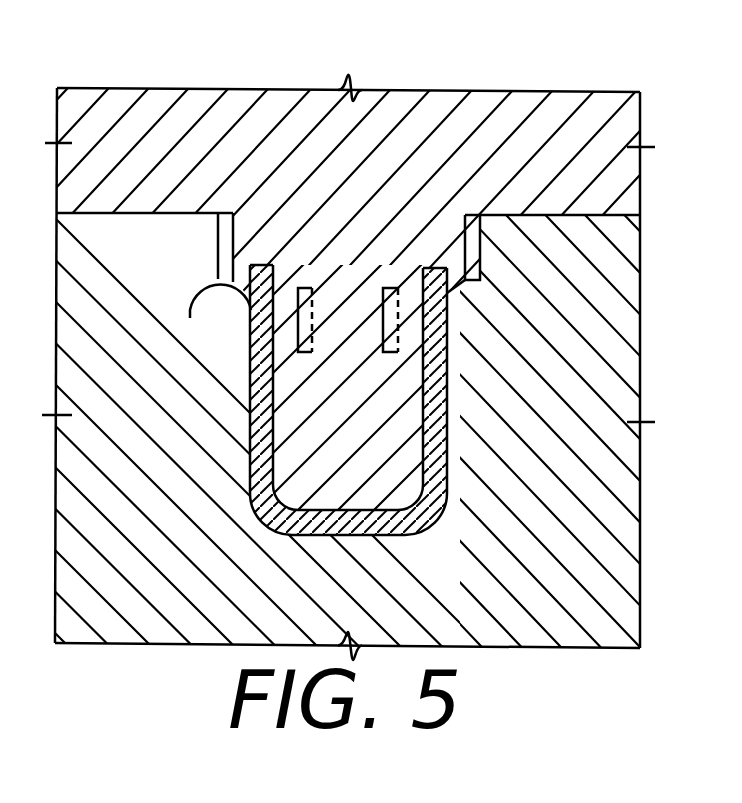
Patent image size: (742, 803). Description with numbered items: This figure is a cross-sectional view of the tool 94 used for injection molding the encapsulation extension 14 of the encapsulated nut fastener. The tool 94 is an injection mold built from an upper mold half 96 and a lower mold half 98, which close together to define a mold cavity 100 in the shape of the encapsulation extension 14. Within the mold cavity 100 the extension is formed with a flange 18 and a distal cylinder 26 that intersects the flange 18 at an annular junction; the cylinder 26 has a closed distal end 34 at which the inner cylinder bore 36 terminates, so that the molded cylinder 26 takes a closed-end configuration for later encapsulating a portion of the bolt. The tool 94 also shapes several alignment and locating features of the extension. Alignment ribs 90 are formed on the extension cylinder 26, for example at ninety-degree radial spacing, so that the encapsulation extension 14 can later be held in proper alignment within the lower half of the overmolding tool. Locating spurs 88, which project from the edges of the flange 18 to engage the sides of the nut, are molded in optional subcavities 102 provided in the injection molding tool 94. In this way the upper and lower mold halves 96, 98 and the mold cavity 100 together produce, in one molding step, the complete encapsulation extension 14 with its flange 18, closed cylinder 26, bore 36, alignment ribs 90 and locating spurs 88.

The upper mold half 96 is at (57, 90).
The tool 94 is at (640, 90).
The encapsulation extension 14 is at (440, 526).
The lower mold half 98 is at (55, 643).
The distal cylinder 26 is at (250, 432).
The closed distal end 34 is at (358, 537).
The cylinder bore 36 is at (423, 383).
The mold cavity 100 is at (423, 460).
The alignment ribs 90 is at (385, 288).
The subcavities 102 is at (237, 241).
The locating spurs 88 is at (190, 312).
The flange 18 is at (477, 271).